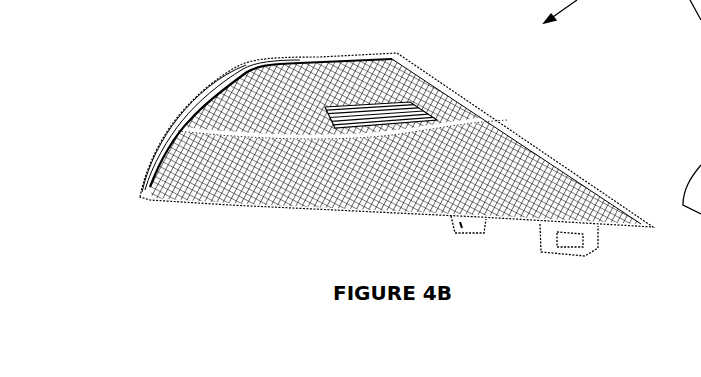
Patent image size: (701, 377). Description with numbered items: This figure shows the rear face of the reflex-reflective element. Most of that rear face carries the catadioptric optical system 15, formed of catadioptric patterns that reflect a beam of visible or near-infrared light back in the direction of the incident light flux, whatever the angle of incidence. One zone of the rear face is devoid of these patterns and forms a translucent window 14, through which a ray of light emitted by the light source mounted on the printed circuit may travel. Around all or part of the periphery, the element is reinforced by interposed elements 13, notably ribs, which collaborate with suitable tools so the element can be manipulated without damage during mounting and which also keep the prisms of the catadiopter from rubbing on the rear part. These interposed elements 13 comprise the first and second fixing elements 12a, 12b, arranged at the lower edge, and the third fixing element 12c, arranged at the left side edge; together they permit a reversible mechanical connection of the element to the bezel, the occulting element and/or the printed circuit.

The first fixing element 12a is at (586, 253).
The second fixing element 12b is at (466, 228).
The third fixing element 12c is at (170, 132).
The interposed elements 13 is at (148, 190).
The translucent window 14 is at (383, 128).
The catadioptric optical system 15 is at (447, 100).